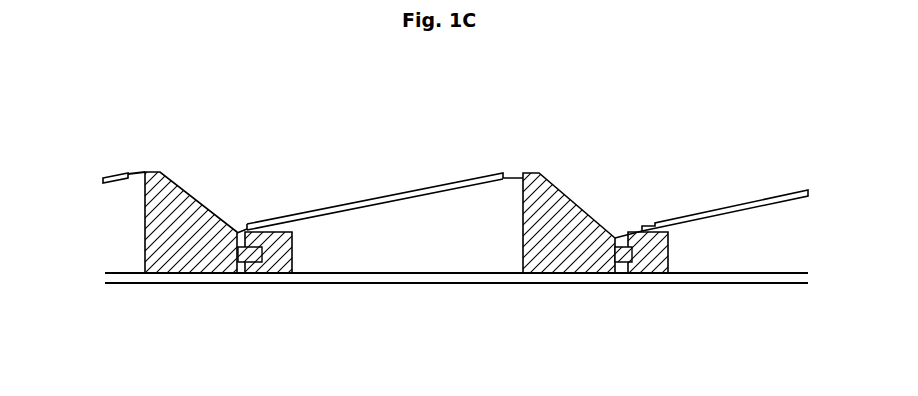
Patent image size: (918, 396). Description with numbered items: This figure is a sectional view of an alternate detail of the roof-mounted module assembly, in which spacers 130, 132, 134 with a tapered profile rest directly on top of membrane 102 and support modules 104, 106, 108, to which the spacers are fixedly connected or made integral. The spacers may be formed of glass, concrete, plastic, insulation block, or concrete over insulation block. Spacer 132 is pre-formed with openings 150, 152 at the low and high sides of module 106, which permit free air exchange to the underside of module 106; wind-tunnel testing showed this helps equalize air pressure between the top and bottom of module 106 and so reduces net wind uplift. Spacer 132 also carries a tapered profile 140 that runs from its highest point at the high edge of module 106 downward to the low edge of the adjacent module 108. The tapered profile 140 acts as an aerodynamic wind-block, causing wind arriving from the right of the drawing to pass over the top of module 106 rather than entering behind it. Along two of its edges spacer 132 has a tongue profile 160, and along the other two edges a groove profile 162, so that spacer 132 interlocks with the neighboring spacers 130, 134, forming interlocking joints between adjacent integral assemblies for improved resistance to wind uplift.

The membrane 102 is at (358, 284).
The module 104 is at (118, 170).
The module 106 is at (371, 197).
The module 108 is at (760, 200).
The spacer 130 is at (203, 257).
The spacer 132 is at (290, 257).
The spacer 134 is at (655, 258).
The tapered profile 140 is at (590, 207).
The opening 150 is at (513, 203).
The opening 152 is at (262, 227).
The tongue profile 160 is at (630, 254).
The groove profile 162 is at (258, 258).